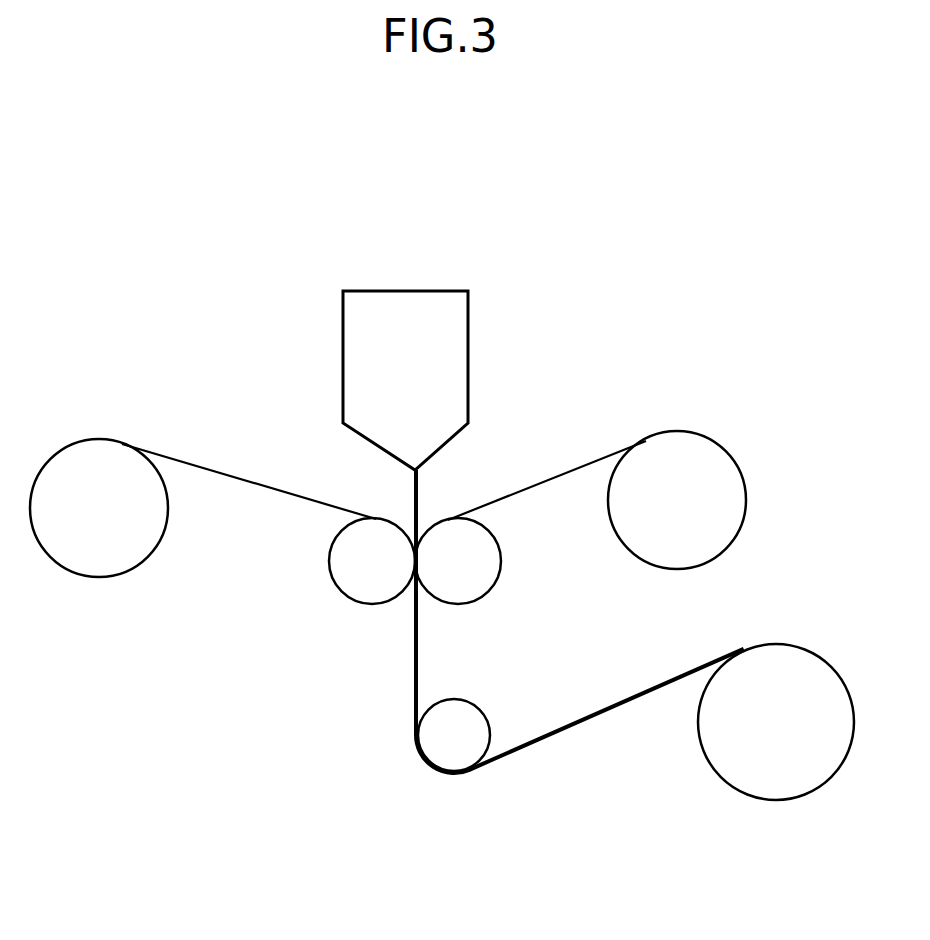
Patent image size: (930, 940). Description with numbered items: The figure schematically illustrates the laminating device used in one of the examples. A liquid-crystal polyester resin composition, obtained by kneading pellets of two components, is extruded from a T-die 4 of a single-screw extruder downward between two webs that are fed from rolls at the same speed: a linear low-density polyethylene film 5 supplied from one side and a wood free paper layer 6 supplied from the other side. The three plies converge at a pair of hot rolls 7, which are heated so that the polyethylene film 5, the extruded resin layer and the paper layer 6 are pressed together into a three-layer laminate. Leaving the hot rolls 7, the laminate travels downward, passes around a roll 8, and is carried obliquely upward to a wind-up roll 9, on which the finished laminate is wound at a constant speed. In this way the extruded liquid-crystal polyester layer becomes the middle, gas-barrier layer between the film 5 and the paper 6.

The T-die 4 is at (391, 380).
The polyethylene film 5 is at (203, 492).
The paper layer 6 is at (597, 486).
The hot roll 7 is at (409, 580).
The roll 8 is at (454, 766).
The wind-up roll 9 is at (776, 696).